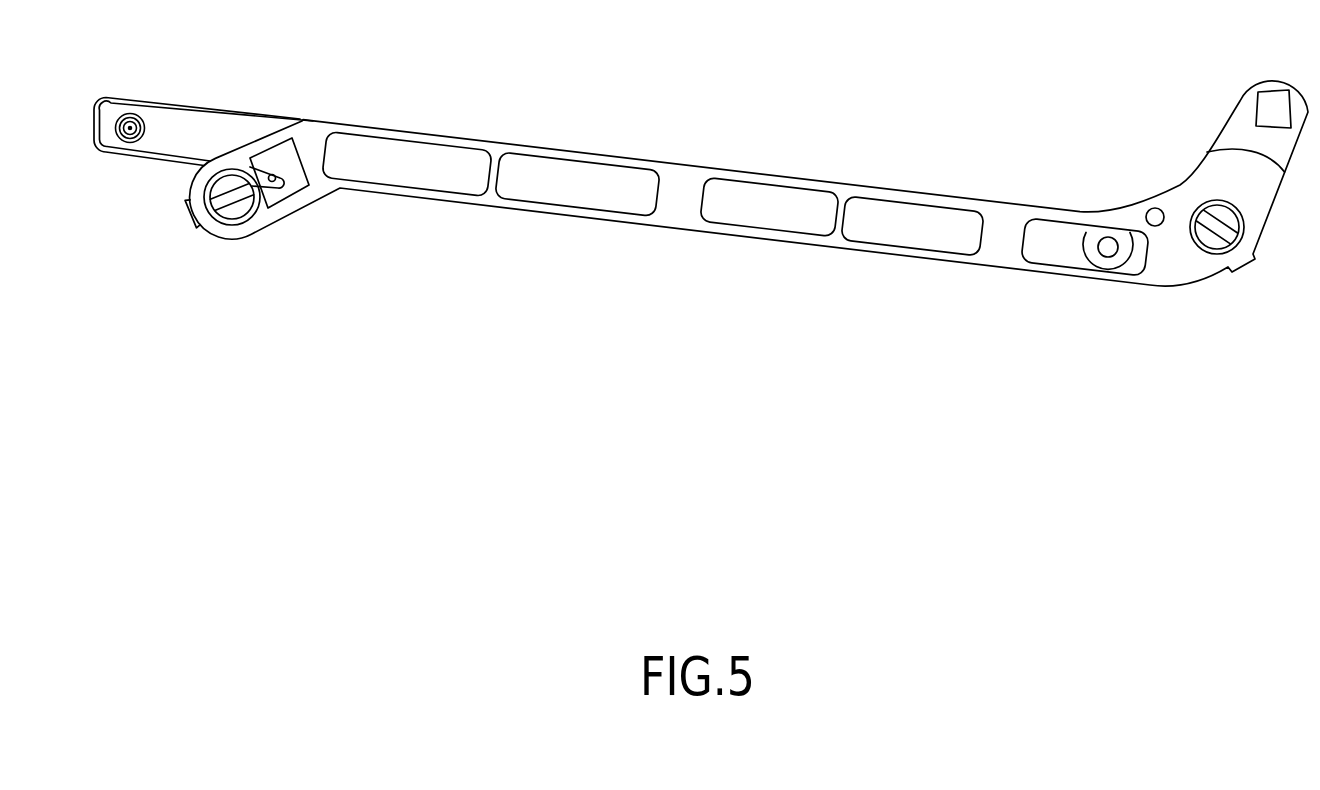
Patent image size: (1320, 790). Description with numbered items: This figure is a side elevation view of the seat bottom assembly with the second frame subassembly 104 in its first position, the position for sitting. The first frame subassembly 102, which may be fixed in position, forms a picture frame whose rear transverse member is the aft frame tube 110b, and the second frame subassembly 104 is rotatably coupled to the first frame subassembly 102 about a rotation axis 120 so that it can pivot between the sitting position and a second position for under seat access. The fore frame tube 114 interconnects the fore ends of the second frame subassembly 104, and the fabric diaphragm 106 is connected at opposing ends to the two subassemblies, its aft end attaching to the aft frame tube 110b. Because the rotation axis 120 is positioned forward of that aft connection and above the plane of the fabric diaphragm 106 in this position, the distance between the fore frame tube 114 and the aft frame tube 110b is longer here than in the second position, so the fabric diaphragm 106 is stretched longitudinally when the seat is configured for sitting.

The first frame subassembly 102 is at (708, 248).
The second frame subassembly 104 is at (165, 97).
The fabric diaphragm 106 is at (252, 157).
The fore frame tube 114 is at (128, 134).
The rotation axis 120 is at (1155, 213).
The aft frame tube 110b is at (1213, 233).